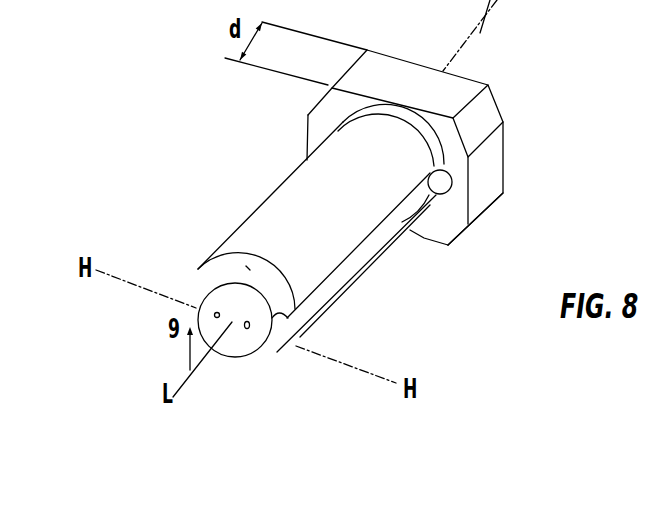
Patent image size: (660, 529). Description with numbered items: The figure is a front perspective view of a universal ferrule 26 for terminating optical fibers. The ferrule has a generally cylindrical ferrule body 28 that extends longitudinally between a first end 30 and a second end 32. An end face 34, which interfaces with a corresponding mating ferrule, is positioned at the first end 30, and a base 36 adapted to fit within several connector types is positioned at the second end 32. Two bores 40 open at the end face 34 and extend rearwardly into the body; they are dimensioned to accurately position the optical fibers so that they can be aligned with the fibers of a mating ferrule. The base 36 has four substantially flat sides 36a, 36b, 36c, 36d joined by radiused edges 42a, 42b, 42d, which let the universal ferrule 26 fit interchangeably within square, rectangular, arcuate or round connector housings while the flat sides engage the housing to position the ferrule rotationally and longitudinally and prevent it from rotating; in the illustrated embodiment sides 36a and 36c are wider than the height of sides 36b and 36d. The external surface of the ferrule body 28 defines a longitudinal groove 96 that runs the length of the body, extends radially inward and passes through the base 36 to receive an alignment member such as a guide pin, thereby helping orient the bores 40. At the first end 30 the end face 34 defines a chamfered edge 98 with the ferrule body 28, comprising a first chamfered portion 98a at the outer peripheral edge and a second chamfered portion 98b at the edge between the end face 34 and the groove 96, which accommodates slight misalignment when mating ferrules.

The universal ferrule 26 is at (431, 305).
The ferrule body 28 is at (280, 213).
The first end 30 is at (221, 372).
The second end 32 is at (394, 145).
The end face 34 is at (238, 348).
The base 36 is at (317, 127).
The side 36a is at (393, 72).
The side 36b is at (493, 172).
The side 36c is at (425, 240).
The side 36d is at (306, 113).
The bore 40 is at (216, 313).
The edge 42a is at (493, 117).
The edge 42b is at (480, 212).
The edge 42d is at (316, 97).
The longitudinal groove 96 is at (340, 275).
The chamfered edge 98 is at (303, 261).
The first chamfered portion 98a is at (248, 268).
The second chamfered portion 98b is at (272, 330).